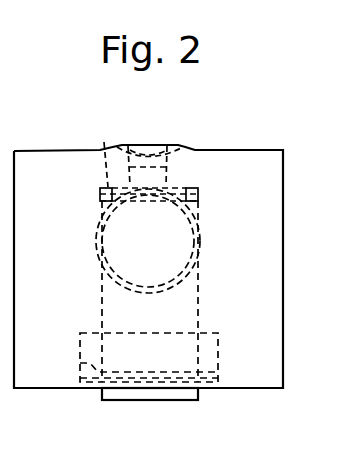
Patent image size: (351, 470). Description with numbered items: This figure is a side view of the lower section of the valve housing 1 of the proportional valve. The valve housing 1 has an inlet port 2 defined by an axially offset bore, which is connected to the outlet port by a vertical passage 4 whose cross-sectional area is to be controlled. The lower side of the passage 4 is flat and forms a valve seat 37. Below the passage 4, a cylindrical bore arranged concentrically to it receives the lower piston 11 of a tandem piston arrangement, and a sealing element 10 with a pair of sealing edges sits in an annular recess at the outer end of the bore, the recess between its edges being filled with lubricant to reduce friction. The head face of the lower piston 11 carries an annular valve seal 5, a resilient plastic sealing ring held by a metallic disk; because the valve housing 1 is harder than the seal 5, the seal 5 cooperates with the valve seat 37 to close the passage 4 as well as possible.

The valve housing 1 is at (270, 183).
The inlet port 2 is at (186, 241).
The passage 4 is at (172, 168).
The valve seal 5 is at (104, 142).
The valve seat 37 is at (203, 194).
The sealing element 10 is at (218, 347).
The lower piston 11 is at (157, 397).